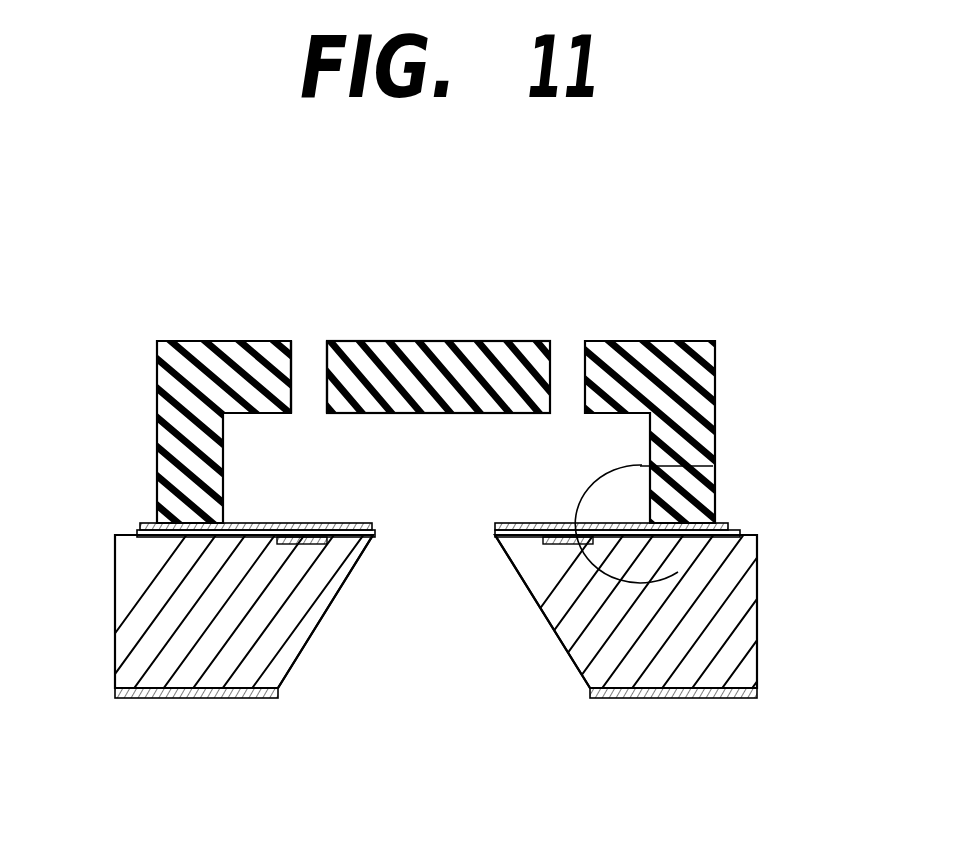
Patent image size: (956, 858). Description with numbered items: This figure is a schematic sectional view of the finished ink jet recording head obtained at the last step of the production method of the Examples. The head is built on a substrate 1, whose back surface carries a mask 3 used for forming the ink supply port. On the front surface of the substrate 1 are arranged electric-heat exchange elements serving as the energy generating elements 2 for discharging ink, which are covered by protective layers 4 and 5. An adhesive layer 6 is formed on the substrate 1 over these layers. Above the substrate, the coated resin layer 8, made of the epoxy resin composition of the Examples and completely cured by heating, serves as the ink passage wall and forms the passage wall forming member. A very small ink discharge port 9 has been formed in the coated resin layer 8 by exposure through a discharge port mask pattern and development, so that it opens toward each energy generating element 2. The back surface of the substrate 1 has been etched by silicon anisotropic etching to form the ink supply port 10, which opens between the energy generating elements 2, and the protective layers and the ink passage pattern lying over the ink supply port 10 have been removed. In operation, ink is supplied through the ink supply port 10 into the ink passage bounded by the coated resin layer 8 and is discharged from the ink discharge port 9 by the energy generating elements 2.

The substrate 1 is at (730, 665).
The energy generating element 2 is at (678, 572).
The mask 3 is at (680, 698).
The protective layer 4 is at (735, 528).
The protective layer 5 is at (713, 467).
The adhesive layer 6 is at (152, 522).
The coated resin layer 8 is at (220, 374).
The ink discharge port 9 is at (307, 376).
The ink supply port 10 is at (430, 627).